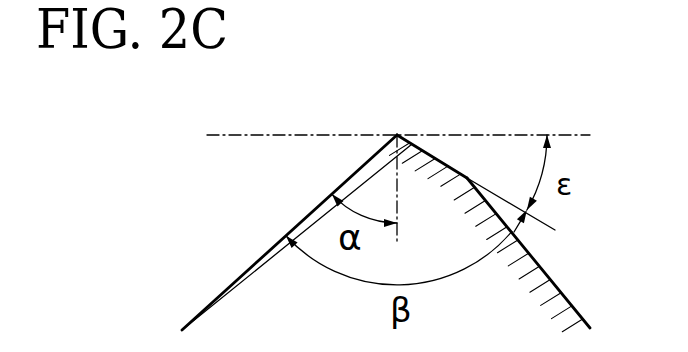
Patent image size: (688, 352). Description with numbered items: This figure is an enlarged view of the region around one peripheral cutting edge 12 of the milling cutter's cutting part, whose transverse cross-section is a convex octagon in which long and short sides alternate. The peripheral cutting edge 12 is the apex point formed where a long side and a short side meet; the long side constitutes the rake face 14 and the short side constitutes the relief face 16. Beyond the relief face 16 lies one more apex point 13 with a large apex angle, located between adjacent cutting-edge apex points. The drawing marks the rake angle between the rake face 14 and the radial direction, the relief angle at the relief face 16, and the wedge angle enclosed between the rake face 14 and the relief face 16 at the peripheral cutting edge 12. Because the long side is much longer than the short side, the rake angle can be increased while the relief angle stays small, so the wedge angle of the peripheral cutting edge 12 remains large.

The peripheral cutting edge 12 is at (397, 135).
The apex point 13 is at (467, 178).
The rake face 14 is at (252, 266).
The relief face 16 is at (431, 155).